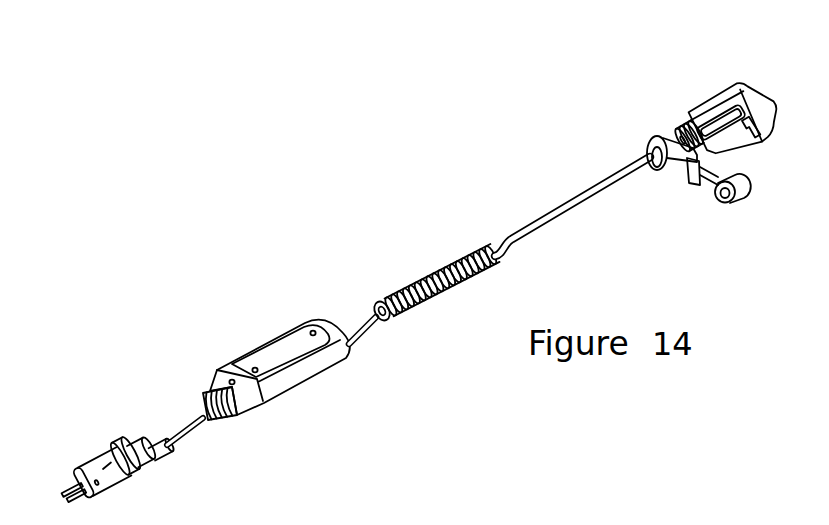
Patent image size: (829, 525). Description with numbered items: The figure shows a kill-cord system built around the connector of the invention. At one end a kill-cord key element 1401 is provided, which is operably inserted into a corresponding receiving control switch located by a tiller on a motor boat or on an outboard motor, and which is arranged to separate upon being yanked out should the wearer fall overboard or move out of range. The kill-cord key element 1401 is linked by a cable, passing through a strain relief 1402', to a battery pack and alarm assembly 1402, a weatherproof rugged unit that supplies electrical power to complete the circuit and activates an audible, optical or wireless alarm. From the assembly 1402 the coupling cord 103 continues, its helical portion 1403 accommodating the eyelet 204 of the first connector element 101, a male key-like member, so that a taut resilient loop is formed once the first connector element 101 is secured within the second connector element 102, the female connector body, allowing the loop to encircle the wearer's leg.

The first connector element 101 is at (662, 138).
The second connector element 102 is at (743, 90).
The coupling cord 103 is at (543, 220).
The eyelet 204 is at (645, 152).
The kill-cord key element 1401 is at (66, 484).
The battery pack and alarm assembly 1402 is at (293, 297).
The strain relief 1402' is at (191, 343).
The spring 1403 is at (428, 275).